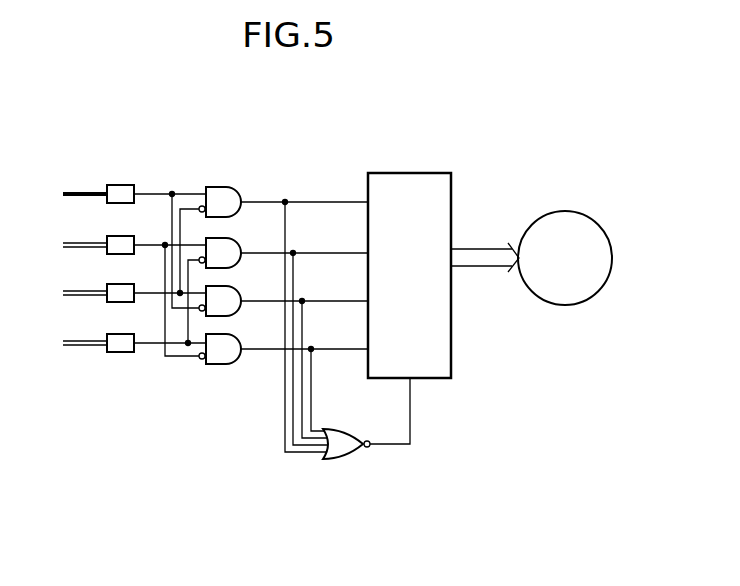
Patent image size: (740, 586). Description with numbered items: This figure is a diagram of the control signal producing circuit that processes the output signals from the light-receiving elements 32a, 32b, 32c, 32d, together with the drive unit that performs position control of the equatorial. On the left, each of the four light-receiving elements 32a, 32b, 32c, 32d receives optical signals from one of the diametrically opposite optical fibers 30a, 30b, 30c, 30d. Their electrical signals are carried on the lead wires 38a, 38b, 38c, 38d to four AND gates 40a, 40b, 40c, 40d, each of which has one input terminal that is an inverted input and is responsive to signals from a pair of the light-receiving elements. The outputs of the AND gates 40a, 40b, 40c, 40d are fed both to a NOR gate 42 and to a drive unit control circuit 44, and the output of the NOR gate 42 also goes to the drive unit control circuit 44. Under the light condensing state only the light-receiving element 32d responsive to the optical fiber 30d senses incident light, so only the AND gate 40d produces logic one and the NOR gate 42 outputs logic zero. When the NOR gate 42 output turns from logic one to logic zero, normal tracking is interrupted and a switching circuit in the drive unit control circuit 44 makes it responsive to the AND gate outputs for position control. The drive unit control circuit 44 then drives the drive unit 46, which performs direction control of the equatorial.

The optical fiber 30a is at (80, 192).
The optical fiber 30b is at (77, 243).
The optical fiber 30c is at (77, 291).
The optical fiber 30d is at (77, 341).
The light-receiving element 32a is at (113, 185).
The light-receiving element 32b is at (113, 236).
The light-receiving element 32c is at (124, 281).
The light-receiving element 32d is at (124, 332).
The lead wire 38a is at (165, 245).
The lead wire 38b is at (173, 193).
The lead wire 38c is at (155, 293).
The lead wire 38d is at (177, 345).
The AND gate 40a is at (238, 187).
The AND gate 40b is at (238, 238).
The AND gate 40c is at (253, 280).
The AND gate 40d is at (253, 331).
The NOR gate 42 is at (340, 429).
The drive unit control circuit 44 is at (452, 342).
The drive unit 46 is at (561, 305).